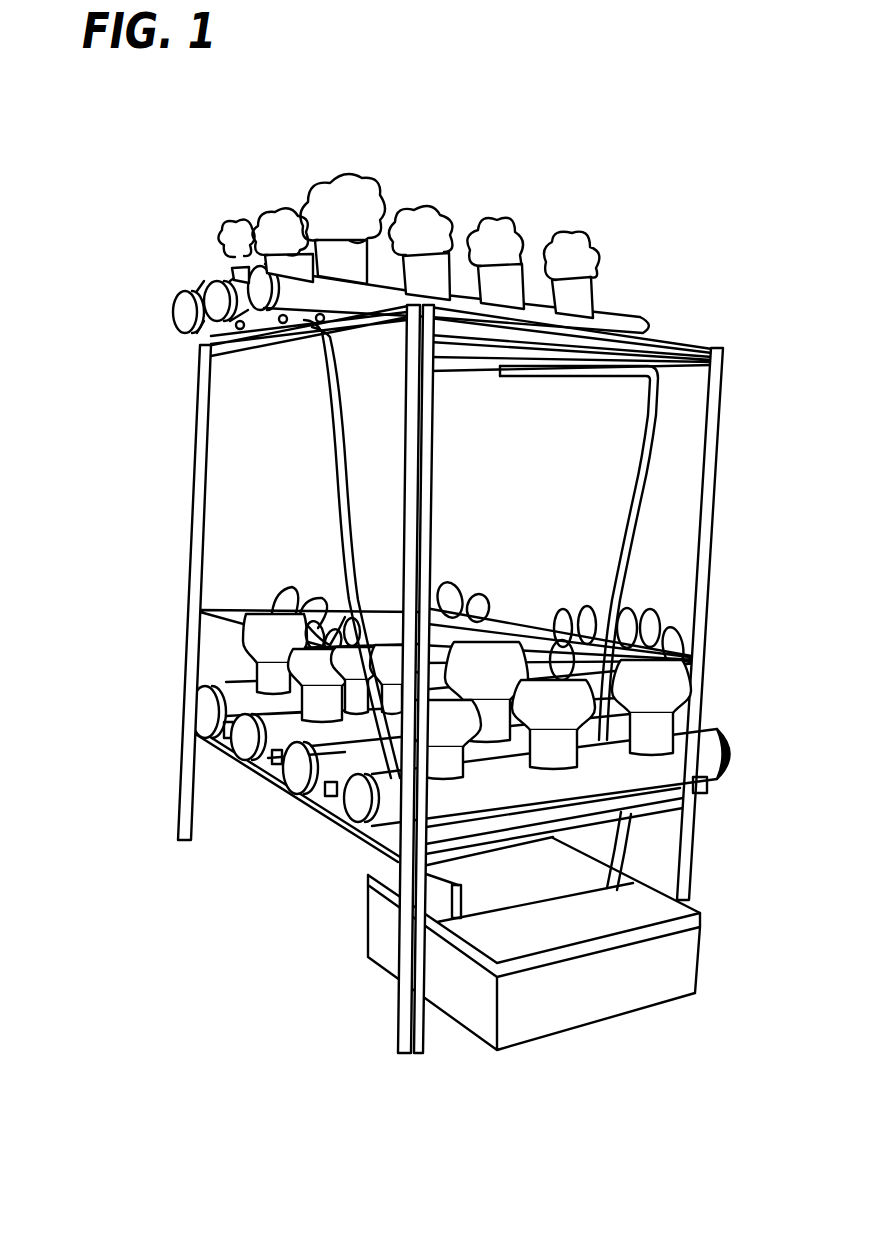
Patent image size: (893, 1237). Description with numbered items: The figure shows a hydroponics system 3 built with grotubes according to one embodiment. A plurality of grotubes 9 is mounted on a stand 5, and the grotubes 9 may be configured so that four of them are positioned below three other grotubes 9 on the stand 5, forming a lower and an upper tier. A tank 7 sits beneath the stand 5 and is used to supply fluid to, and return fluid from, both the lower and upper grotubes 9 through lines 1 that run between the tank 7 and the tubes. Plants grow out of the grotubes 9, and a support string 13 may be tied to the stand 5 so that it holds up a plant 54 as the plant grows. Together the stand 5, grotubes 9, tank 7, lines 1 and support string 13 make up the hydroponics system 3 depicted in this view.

The hydroponics system 3 is at (230, 164).
The lines 1 is at (330, 427).
The stand 5 is at (197, 527).
The plant 54 is at (252, 618).
The support string 13 is at (692, 693).
The grotubes 9 is at (292, 781).
The tank 7 is at (677, 962).